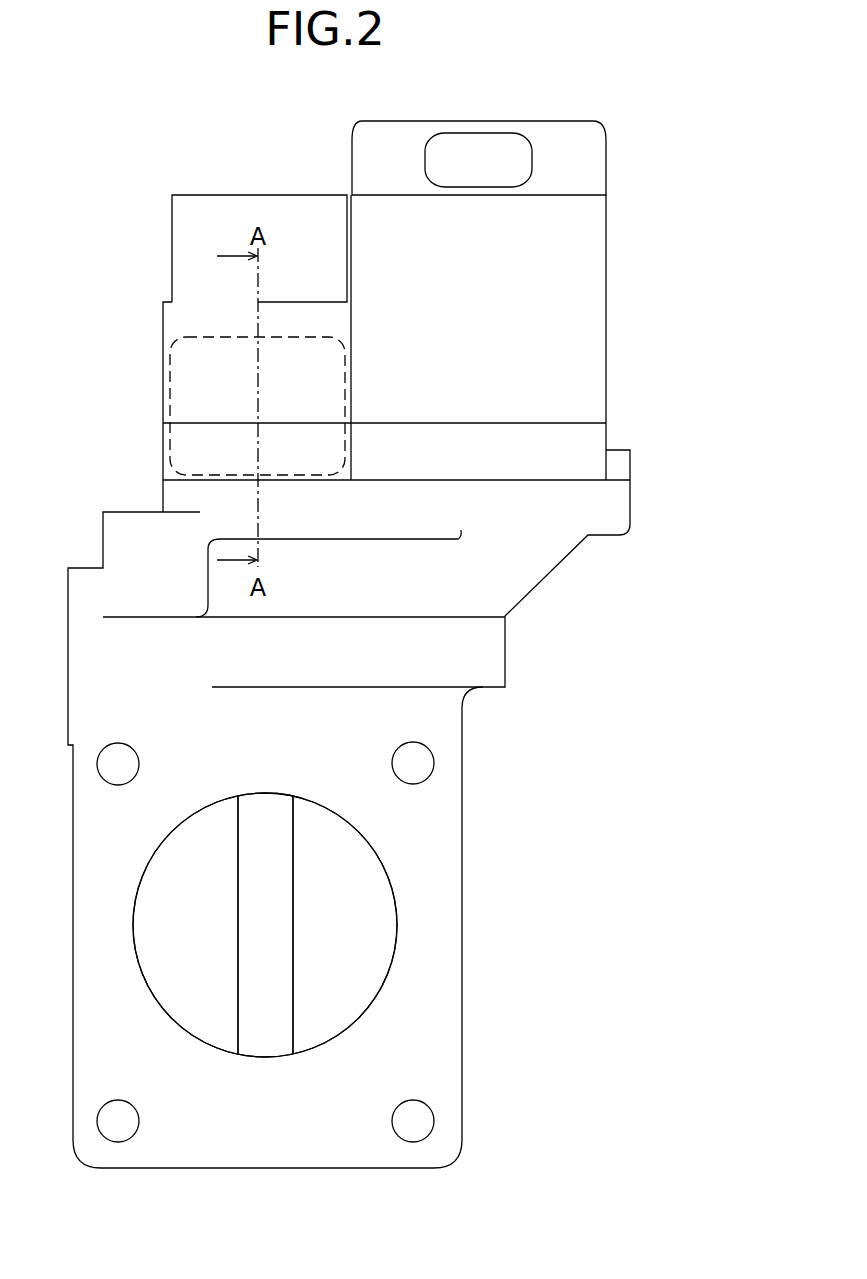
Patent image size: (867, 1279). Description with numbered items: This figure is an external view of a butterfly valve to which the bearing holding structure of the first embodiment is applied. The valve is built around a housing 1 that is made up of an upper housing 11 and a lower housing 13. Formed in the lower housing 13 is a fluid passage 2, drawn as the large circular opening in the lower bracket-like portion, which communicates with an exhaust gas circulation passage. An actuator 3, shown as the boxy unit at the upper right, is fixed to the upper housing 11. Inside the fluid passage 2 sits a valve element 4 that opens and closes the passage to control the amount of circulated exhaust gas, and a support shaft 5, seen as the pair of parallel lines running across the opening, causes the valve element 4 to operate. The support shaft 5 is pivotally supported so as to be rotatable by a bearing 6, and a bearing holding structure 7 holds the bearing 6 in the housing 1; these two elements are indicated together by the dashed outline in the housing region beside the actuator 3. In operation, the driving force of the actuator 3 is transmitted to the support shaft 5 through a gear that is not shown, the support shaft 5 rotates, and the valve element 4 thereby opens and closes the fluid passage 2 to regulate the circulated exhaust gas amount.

The housing 1 is at (82, 317).
The fluid passage 2 is at (392, 912).
The actuator 3 is at (607, 317).
The valve element 4 is at (361, 968).
The support shaft 5 is at (254, 983).
The bearing 6 is at (163, 452).
The bearing holding structure 7 is at (257, 406).
The upper housing 11 is at (163, 330).
The lower housing 13 is at (163, 437).